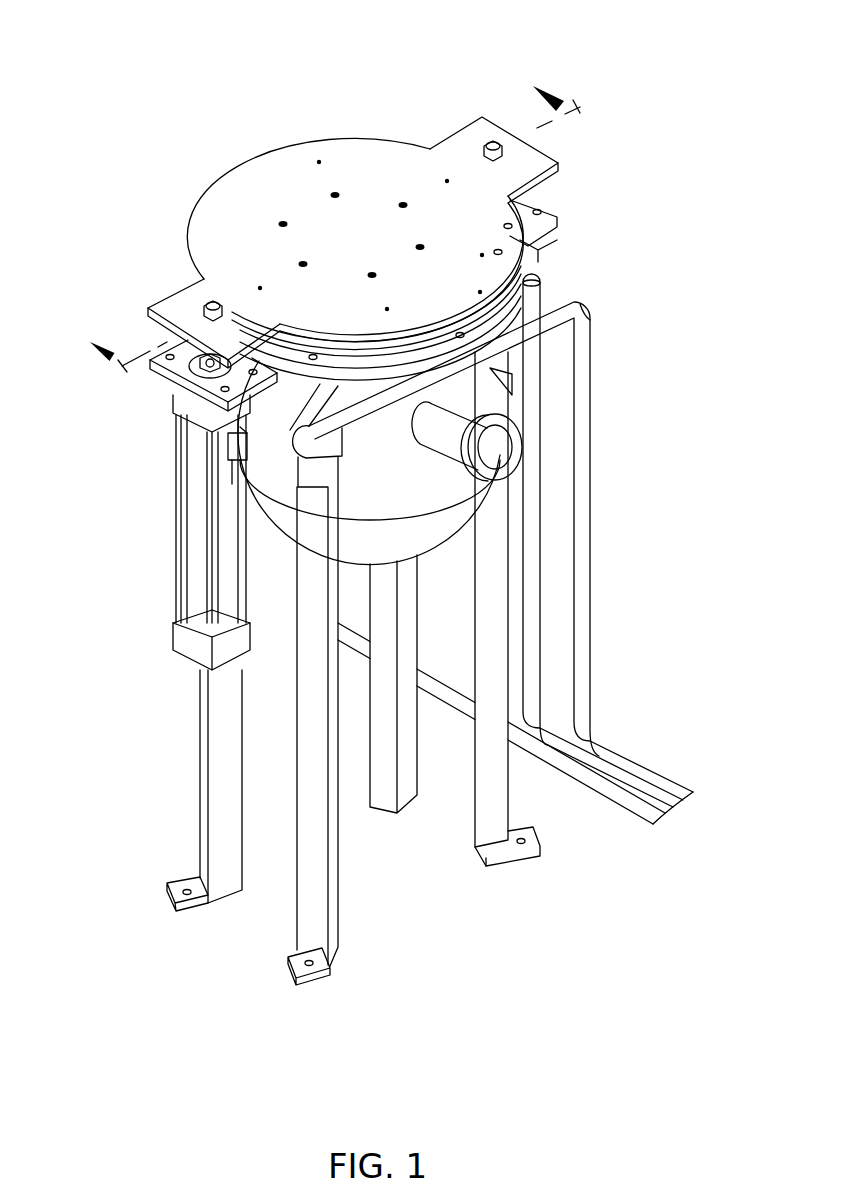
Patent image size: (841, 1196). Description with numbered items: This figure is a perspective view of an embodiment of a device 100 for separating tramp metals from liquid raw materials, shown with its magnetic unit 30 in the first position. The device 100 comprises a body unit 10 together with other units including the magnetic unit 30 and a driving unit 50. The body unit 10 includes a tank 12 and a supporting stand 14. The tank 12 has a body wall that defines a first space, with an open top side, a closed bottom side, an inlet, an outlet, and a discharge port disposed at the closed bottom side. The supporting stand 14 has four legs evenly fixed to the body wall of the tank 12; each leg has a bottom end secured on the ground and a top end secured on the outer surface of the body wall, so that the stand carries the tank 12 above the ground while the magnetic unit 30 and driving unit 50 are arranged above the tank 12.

The device for separating tramp metals from liquid raw materials 100 is at (343, 95).
The magnetic unit 30 is at (464, 212).
The driving unit 50 is at (173, 661).
The body unit 10 is at (655, 535).
The tank 12 is at (408, 520).
The supporting stand 14 is at (489, 634).